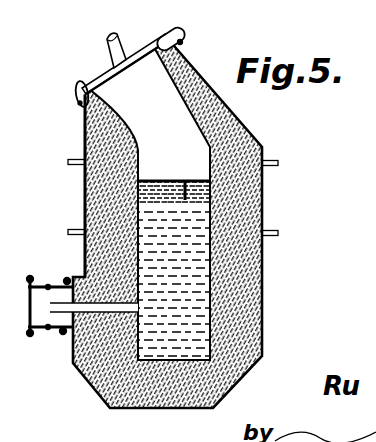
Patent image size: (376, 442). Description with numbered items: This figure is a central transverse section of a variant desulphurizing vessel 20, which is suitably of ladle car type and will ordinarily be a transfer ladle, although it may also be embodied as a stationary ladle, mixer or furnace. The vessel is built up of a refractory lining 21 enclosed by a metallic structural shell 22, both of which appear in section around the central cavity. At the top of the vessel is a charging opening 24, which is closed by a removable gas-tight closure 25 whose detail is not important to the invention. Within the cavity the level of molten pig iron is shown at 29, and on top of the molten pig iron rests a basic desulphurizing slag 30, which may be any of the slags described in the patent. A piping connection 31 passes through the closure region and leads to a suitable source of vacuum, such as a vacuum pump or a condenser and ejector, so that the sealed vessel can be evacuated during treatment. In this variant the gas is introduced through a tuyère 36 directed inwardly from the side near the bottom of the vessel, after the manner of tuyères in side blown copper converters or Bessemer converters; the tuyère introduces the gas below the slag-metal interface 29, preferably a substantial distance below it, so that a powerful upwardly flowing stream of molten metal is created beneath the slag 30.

The desulphurizing vessel 20 is at (245, 203).
The refractory lining 21 is at (243, 262).
The metallic structural shell 22 is at (85, 189).
The charging opening 24 is at (150, 204).
The removable gas-tight closure 25 is at (105, 72).
The level of molten pig iron 29 is at (183, 180).
The basic desulphurizing slag 30 is at (158, 179).
The piping connection 31 is at (116, 38).
The tuyère 36 is at (57, 333).